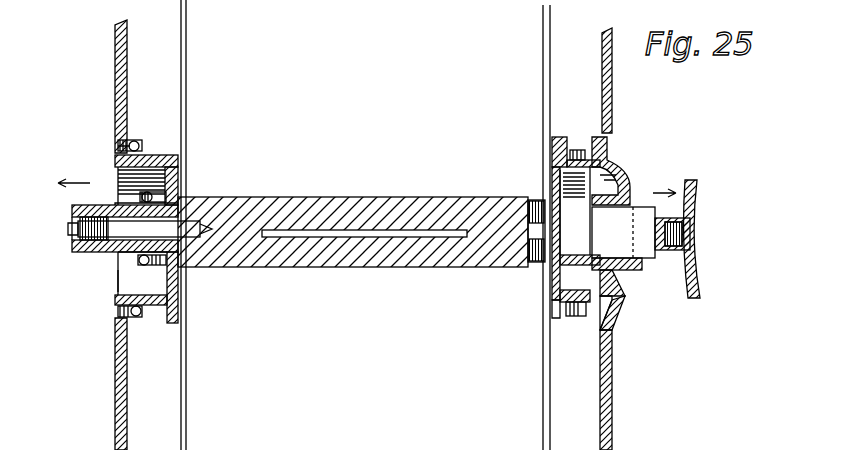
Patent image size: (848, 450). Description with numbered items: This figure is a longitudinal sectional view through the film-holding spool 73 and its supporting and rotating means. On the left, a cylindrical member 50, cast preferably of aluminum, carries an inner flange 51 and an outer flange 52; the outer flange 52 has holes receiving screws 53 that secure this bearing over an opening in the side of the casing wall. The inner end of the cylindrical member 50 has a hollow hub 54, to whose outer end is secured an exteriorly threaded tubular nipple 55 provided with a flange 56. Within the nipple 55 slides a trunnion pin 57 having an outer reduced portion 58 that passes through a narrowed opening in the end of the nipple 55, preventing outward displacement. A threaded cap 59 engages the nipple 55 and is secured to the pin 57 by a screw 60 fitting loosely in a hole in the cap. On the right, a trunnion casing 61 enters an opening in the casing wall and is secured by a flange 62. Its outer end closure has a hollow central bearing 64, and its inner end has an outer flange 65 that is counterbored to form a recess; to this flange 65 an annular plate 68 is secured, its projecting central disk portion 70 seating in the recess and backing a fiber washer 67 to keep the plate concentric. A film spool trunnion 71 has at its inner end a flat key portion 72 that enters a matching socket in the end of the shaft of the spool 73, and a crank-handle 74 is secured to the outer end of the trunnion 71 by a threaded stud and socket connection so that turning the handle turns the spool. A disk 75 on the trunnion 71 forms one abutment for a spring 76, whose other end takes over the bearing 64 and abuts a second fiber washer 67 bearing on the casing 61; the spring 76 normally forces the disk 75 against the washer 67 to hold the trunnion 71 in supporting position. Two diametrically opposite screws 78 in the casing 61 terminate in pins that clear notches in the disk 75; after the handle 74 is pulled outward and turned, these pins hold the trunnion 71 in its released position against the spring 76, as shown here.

The cylindrical member 50 is at (142, 160).
The inner flange 51 is at (185, 128).
The outer flange 52 is at (116, 127).
The screws 53 is at (137, 314).
The hollow hub 54 is at (185, 174).
The tubular nipple 55 is at (133, 257).
The flange 56 is at (147, 268).
The trunnion pin 57 is at (78, 253).
The reduced portion 58 is at (78, 240).
The threaded cap 59 is at (72, 208).
The screw 60 is at (68, 228).
The trunnion casing 61 is at (612, 173).
The flange 62 is at (609, 130).
The hollow central bearing 64 is at (625, 270).
The outer flange 65 is at (570, 318).
The fiber washer 67 is at (617, 286).
The annular plate 68 is at (556, 305).
The central disk portion 70 is at (560, 162).
The film spool trunnion 71 is at (627, 233).
The flat key portion 72 is at (545, 268).
The spool 73 is at (353, 232).
The crank-handle 74 is at (698, 200).
The disk 75 is at (610, 193).
The spring 76 is at (628, 292).
The screws 78 is at (575, 150).